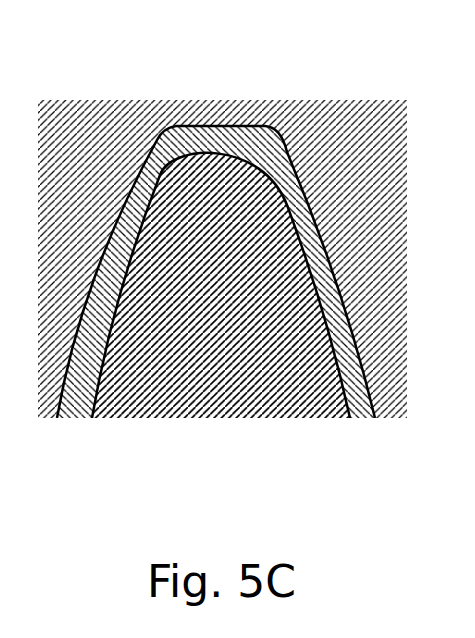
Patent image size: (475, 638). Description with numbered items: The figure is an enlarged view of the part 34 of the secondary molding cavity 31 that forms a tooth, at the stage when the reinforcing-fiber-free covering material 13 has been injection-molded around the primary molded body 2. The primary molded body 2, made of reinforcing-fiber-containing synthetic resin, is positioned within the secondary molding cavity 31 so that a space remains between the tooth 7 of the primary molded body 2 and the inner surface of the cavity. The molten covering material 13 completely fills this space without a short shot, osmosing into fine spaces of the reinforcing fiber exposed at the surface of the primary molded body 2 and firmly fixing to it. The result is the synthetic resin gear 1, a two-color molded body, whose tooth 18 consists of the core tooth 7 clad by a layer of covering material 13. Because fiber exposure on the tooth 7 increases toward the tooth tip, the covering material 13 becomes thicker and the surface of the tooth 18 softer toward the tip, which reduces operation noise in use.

The synthetic resin gear 1 is at (113, 219).
The primary molded body 2 is at (197, 183).
The tooth 7 is at (247, 203).
The covering material 13 is at (230, 126).
The tooth 18 is at (328, 255).
The secondary molding cavity 31 is at (97, 312).
The part of the secondary molding cavity for forming a tooth 34 is at (113, 219).